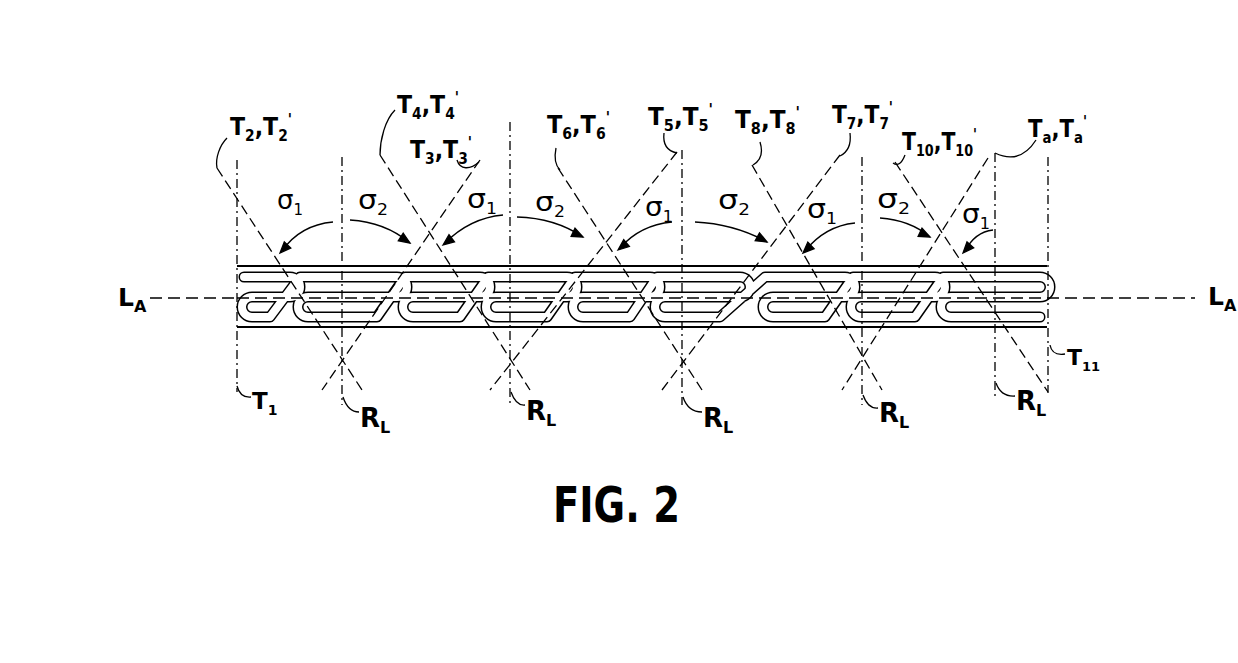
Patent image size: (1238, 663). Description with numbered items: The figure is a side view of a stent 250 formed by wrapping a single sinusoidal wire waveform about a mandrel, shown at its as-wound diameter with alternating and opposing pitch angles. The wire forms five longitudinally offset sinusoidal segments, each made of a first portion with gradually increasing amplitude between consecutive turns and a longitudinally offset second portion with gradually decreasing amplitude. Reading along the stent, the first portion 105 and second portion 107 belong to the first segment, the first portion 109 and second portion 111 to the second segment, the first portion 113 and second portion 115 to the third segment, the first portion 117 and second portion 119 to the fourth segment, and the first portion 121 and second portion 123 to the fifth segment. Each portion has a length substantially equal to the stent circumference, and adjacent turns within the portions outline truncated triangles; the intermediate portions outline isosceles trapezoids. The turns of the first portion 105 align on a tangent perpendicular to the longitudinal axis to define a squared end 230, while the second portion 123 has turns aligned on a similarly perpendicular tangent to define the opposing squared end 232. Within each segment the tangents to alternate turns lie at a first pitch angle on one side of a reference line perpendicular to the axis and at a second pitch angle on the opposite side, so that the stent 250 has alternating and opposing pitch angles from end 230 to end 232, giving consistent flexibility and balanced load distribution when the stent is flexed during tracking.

The stent 250 is at (731, 66).
The squared end 230 is at (237, 312).
The opposing squared end 232 is at (1048, 269).
The first portion 105 is at (271, 328).
The second portion 107 is at (357, 253).
The first portion 109 is at (425, 329).
The second portion 111 is at (513, 265).
The first portion 113 is at (588, 329).
The second portion 115 is at (679, 265).
The first portion 117 is at (765, 329).
The second portion 119 is at (848, 265).
The first portion 121 is at (935, 329).
The second portion 123 is at (1028, 250).